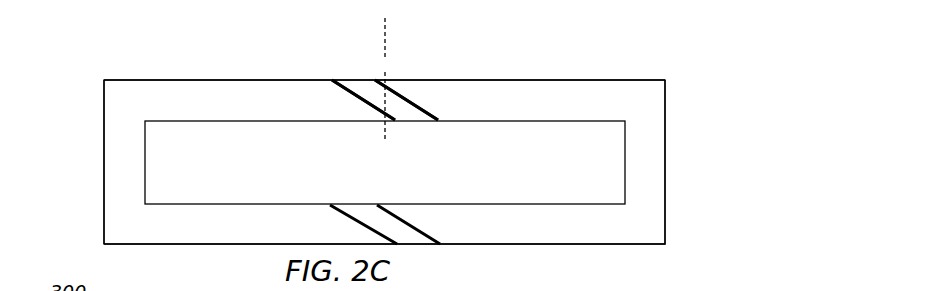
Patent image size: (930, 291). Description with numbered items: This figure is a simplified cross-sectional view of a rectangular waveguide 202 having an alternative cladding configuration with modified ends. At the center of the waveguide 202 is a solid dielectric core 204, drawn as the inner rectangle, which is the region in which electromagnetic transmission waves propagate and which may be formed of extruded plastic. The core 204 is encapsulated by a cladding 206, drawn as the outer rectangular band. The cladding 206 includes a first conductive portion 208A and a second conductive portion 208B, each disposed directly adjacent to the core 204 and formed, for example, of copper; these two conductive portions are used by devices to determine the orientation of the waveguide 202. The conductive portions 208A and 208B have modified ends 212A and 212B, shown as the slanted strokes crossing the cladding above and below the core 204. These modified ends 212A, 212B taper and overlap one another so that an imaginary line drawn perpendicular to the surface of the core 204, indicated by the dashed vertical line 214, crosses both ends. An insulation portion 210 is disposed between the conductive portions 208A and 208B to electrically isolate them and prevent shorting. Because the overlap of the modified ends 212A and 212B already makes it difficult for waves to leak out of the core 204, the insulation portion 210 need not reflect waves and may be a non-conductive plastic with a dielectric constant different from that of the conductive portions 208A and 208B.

The waveguide 202 is at (606, 47).
The solid dielectric core 204 is at (400, 181).
The cladding 206 is at (158, 79).
The first conductive portion 208A is at (117, 170).
The second conductive portion 208B is at (590, 230).
The insulation portion 210 is at (367, 92).
The modified end 212A is at (363, 100).
The modified end 212B is at (410, 100).
The center line 214 is at (386, 43).